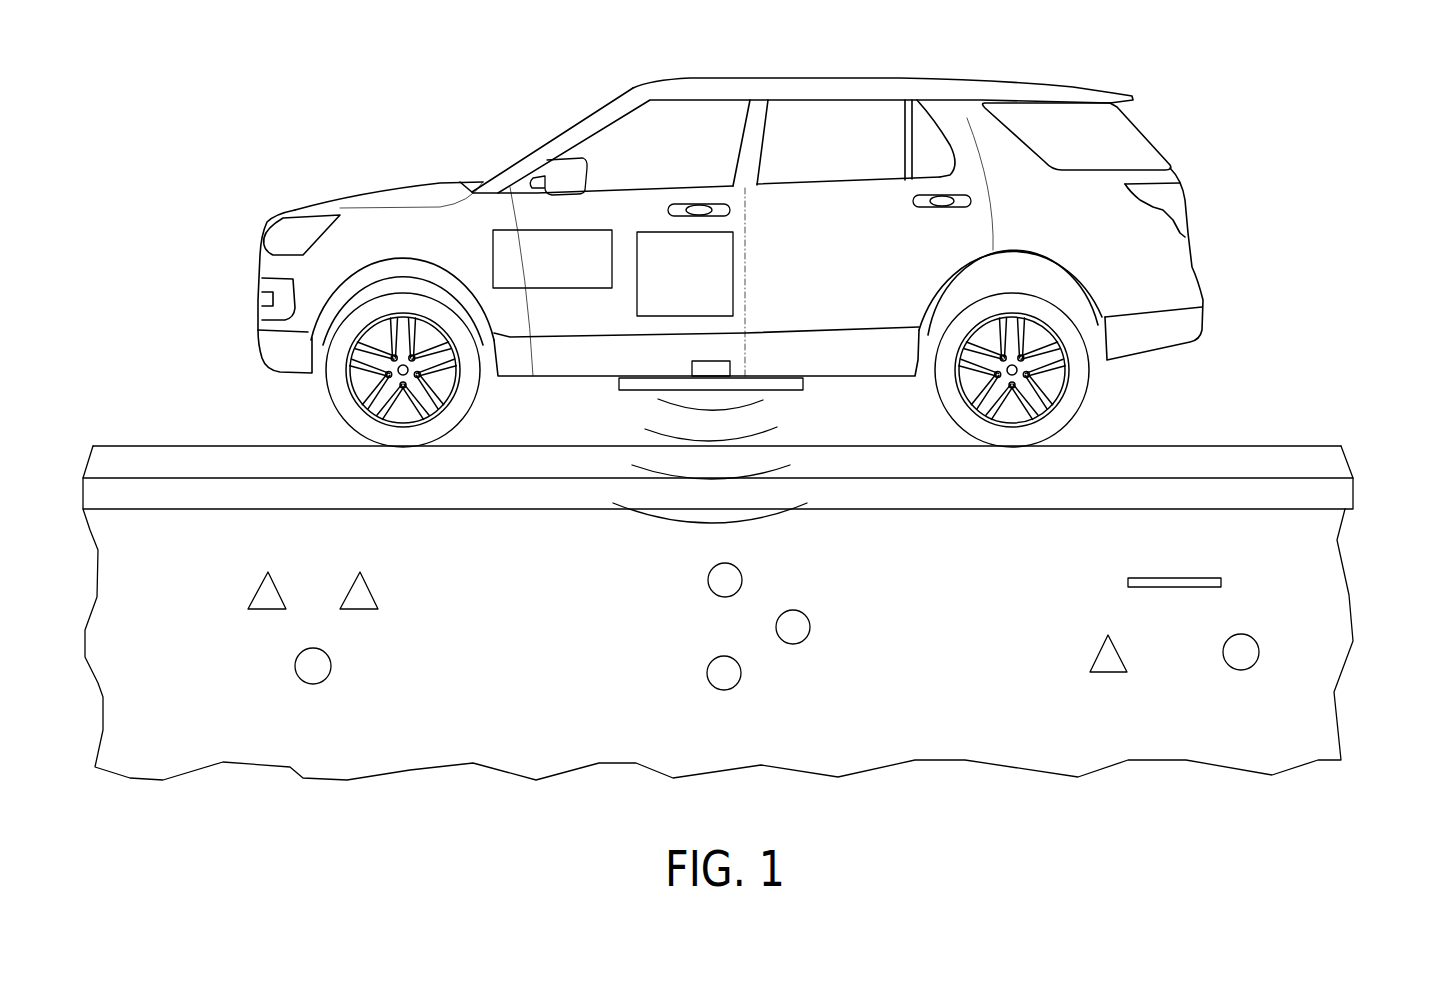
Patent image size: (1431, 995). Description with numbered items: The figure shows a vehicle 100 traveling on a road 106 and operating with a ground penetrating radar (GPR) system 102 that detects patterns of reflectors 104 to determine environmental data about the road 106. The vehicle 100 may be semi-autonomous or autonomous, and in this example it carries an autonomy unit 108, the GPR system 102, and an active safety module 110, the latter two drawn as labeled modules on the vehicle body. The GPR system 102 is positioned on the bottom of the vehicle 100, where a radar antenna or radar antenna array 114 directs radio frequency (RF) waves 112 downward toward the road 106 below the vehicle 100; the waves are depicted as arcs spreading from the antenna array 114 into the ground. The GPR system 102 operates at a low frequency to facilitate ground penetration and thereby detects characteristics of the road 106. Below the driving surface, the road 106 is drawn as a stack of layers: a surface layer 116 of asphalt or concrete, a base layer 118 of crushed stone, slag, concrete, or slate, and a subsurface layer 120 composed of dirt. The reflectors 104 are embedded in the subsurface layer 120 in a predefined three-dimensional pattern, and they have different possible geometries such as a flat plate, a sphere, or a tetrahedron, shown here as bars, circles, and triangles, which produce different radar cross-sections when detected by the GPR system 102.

The vehicle 100 is at (1074, 84).
The ground penetrating radar (GPR) system 102 is at (692, 368).
The reflectors 104 is at (253, 593).
The road 106 is at (1265, 446).
The autonomy unit 108 is at (493, 255).
The active safety module 110 is at (735, 268).
The radio frequency (RF) waves 112 is at (772, 428).
The radar antenna array 114 is at (619, 382).
The surface layer 116 is at (1340, 460).
The base layer 118 is at (1338, 493).
The subsurface layer 120 is at (1312, 574).